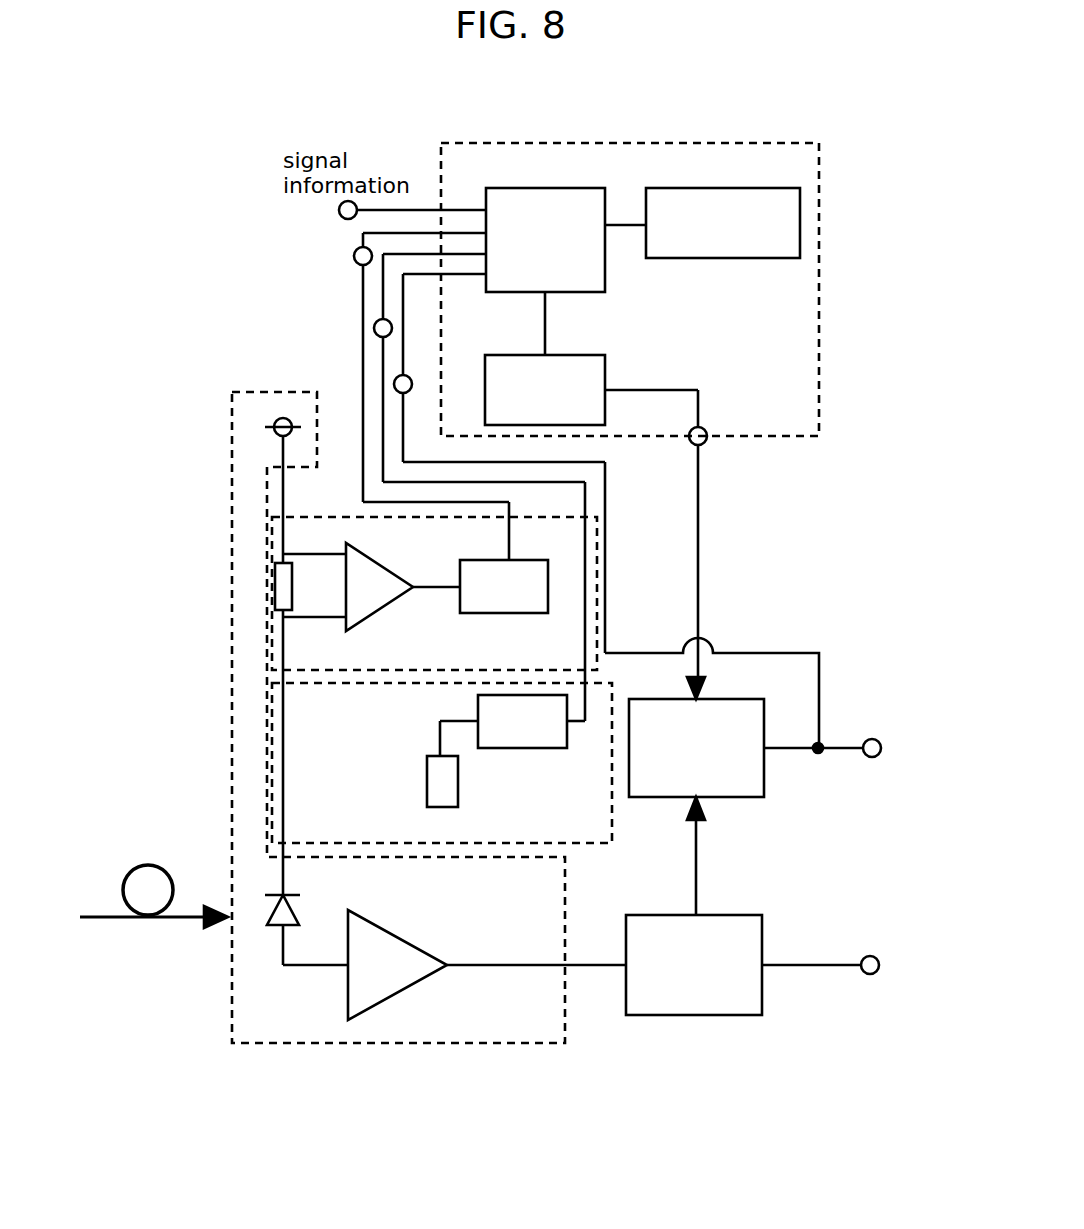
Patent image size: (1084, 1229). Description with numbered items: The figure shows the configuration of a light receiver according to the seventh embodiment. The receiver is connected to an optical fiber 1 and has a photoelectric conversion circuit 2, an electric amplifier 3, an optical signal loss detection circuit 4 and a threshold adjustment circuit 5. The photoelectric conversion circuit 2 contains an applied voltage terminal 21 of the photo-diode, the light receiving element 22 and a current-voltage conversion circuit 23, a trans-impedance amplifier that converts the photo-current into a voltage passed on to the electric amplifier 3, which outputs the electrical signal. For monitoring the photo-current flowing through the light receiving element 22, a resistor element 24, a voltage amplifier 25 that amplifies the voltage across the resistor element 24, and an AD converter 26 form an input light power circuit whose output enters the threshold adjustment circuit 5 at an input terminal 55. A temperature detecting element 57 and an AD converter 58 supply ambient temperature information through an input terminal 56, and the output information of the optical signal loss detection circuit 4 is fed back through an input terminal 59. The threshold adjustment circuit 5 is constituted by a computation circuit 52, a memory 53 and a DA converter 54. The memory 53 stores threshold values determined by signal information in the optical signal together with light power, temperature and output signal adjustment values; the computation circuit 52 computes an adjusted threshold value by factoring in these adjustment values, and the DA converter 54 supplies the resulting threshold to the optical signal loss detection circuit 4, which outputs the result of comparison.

The optical fiber 1 is at (145, 918).
The photoelectric conversion circuit 2 is at (307, 1043).
The electric amplifier 3 is at (712, 1015).
The optical signal loss detection circuit 4 is at (765, 775).
The threshold adjustment circuit 5 is at (730, 143).
The applied voltage terminal 21 is at (283, 418).
The light receiving element 22 is at (293, 895).
The current-voltage conversion circuit 23 is at (415, 930).
The resistor element 24 is at (275, 592).
The voltage amplifier 25 is at (395, 562).
The AD converter 26 is at (460, 603).
The computation circuit 52 is at (590, 188).
The memory 53 is at (745, 188).
The DA converter 54 is at (590, 355).
The input terminal 55 is at (357, 250).
The input terminal 56 is at (377, 321).
The temperature detecting element 57 is at (433, 753).
The AD converter 58 is at (545, 748).
The input terminal 59 is at (397, 377).